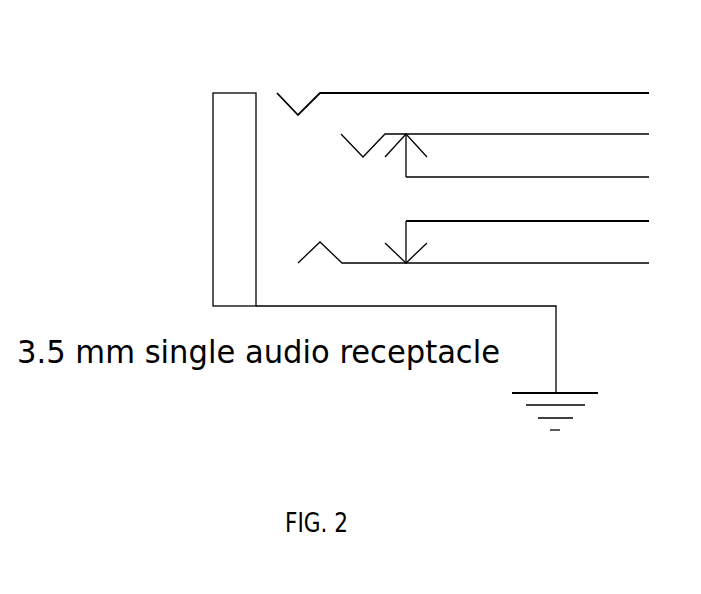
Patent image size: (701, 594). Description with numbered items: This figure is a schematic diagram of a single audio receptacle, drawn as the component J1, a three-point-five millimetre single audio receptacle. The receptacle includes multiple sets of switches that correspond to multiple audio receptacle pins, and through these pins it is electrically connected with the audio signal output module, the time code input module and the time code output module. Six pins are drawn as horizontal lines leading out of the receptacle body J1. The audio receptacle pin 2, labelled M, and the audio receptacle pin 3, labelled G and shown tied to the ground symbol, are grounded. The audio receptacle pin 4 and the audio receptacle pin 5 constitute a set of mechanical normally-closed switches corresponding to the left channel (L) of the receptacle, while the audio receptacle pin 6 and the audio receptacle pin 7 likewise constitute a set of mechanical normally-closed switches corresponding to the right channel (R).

The 3.5 mm single audio receptacle J1 is at (225, 161).
The audio receptacle pin 2 is at (463, 77).
The audio receptacle pin 4 is at (495, 135).
The audio receptacle pin 5 is at (527, 156).
The audio receptacle pin 7 is at (517, 219).
The audio receptacle pin 6 is at (473, 245).
The audio receptacle pin 3 is at (427, 347).